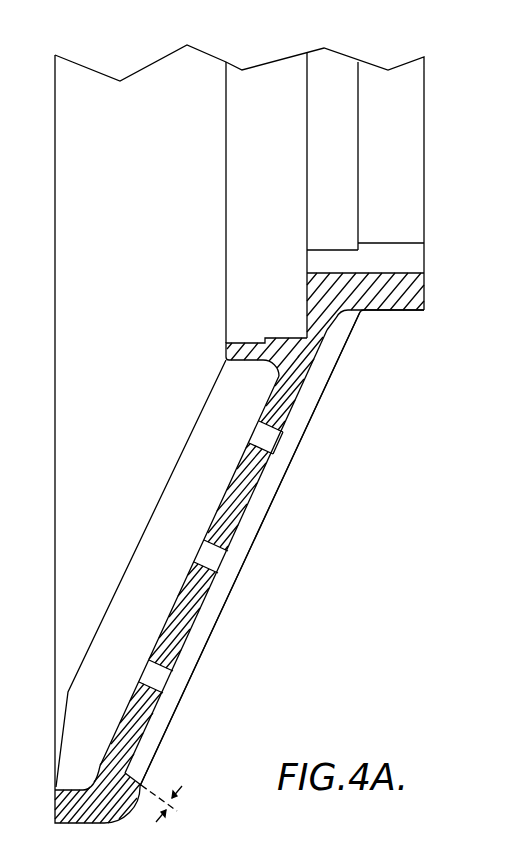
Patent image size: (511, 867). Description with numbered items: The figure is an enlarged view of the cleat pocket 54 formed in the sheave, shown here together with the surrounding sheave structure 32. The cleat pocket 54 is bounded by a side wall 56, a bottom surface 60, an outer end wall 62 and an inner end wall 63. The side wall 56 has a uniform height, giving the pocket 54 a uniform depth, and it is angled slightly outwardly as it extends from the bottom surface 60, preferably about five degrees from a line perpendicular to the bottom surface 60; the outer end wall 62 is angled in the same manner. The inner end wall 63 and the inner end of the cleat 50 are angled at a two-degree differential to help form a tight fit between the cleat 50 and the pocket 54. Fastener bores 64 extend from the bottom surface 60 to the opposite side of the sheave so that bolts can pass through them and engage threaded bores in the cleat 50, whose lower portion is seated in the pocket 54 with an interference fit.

The housing body 32 is at (424, 148).
The cleat 50 is at (172, 792).
The cleat pocket 54 is at (210, 604).
The side wall 56 is at (274, 486).
The bottom surface 60 is at (290, 428).
The outer end wall 62 is at (137, 775).
The inner end wall 63 is at (362, 312).
The fastener bores 64 is at (258, 430).